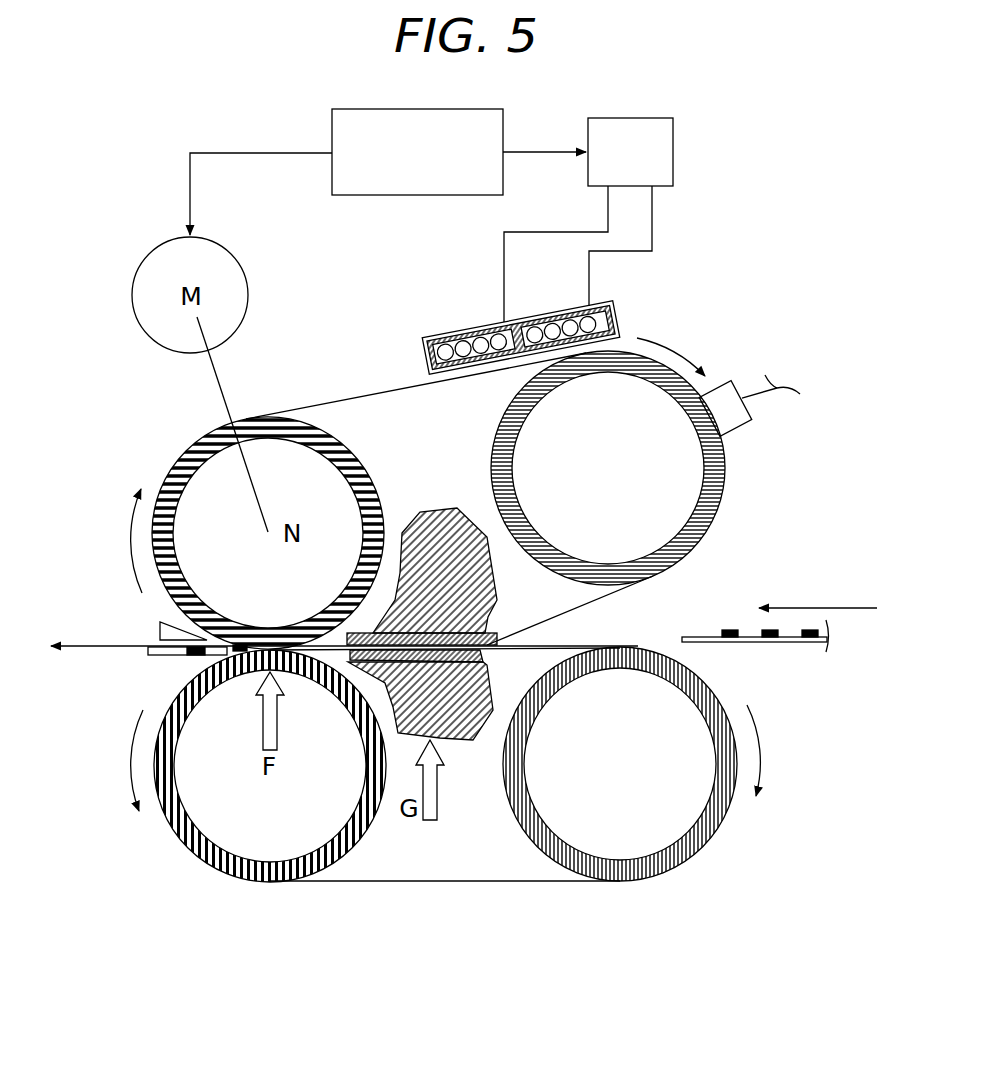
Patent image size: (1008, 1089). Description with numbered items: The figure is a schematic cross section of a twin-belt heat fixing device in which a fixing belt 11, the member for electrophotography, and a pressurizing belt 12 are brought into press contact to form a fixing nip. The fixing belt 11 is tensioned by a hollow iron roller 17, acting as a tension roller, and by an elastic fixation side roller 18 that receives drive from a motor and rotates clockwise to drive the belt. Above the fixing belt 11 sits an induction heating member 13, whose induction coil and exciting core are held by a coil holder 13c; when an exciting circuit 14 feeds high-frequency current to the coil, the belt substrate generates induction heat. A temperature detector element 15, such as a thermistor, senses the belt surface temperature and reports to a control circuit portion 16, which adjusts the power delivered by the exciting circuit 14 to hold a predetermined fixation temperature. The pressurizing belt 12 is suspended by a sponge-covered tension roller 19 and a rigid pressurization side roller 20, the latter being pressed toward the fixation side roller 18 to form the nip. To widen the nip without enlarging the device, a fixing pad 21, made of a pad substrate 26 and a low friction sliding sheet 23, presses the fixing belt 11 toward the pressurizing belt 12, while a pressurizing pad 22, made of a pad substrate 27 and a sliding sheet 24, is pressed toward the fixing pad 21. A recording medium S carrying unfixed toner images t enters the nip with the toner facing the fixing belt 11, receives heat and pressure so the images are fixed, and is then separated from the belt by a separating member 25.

The fixing belt 11 is at (348, 398).
The pressurizing belt 12 is at (503, 882).
The induction heating member 13 is at (516, 313).
The coil holder 13c is at (617, 320).
The exciting circuit 14 is at (588, 220).
The temperature detector element 15 is at (733, 392).
The control circuit portion 16 is at (346, 172).
The roller 17 is at (715, 465).
The fixation side roller 18 is at (355, 450).
The tension roller 19 is at (708, 822).
The pressurization side roller 20 is at (348, 837).
The fixing pad 21 is at (485, 548).
The pressurizing pad 22 is at (494, 712).
The sliding sheet 23 is at (487, 636).
The sliding sheet 24 is at (483, 662).
The separating member 25 is at (162, 630).
The pad substrate 26 is at (477, 537).
The pad substrate 27 is at (477, 710).
The recording medium S is at (792, 643).
The unfixed toner images t is at (728, 630).